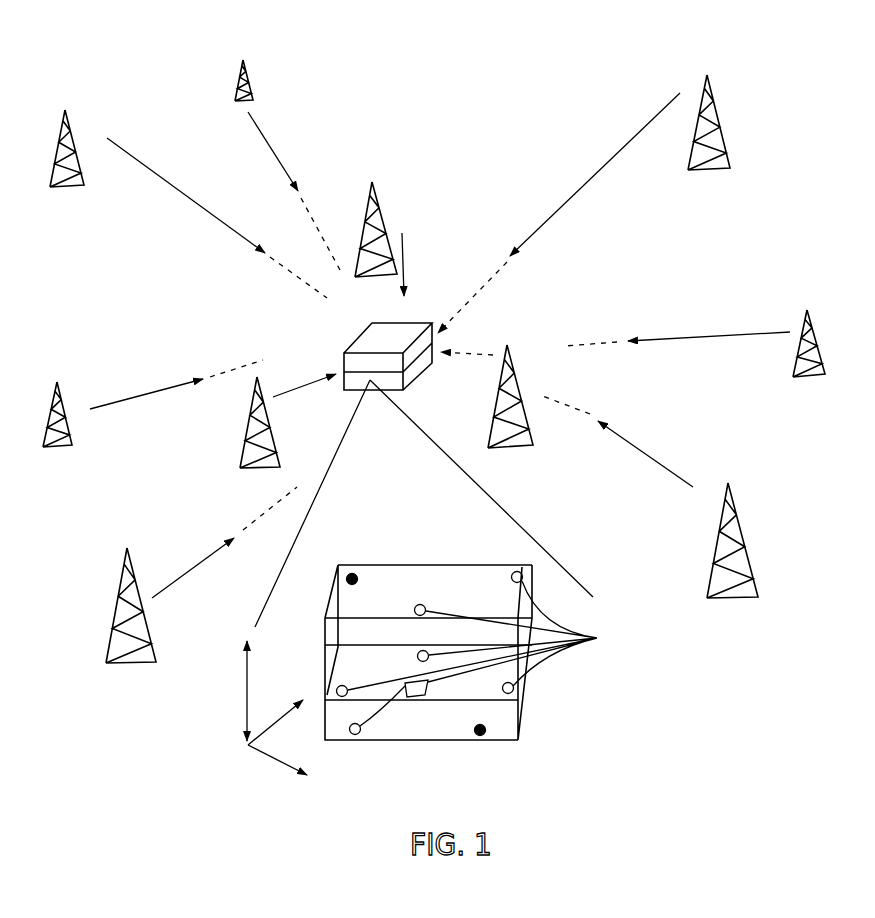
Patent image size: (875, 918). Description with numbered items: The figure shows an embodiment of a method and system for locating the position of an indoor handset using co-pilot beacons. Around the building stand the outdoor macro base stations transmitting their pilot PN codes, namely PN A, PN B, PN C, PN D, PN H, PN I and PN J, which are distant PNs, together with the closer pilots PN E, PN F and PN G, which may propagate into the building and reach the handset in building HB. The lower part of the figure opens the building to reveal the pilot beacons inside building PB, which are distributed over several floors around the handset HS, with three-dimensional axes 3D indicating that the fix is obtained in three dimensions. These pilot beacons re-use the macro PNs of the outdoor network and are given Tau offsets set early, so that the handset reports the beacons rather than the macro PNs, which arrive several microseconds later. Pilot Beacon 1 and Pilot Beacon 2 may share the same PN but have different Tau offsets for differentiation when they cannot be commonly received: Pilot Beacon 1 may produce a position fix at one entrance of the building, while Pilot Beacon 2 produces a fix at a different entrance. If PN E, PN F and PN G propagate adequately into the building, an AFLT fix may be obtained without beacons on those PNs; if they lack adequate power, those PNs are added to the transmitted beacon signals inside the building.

The PN A is at (188, 197).
The PN B is at (596, 199).
The PN C is at (201, 575).
The PN D is at (657, 496).
The PN E is at (389, 236).
The PN F is at (288, 403).
The PN G is at (496, 394).
The PN H is at (287, 161).
The PN I is at (153, 403).
The PN J is at (709, 343).
The handset in building HB is at (443, 329).
The Pilot Beacon 1 is at (353, 573).
The Pilot Beacon 2 is at (482, 735).
The pilot beacons inside building PB is at (536, 653).
The handset HS is at (421, 706).
The 3D axes 3D is at (256, 708).